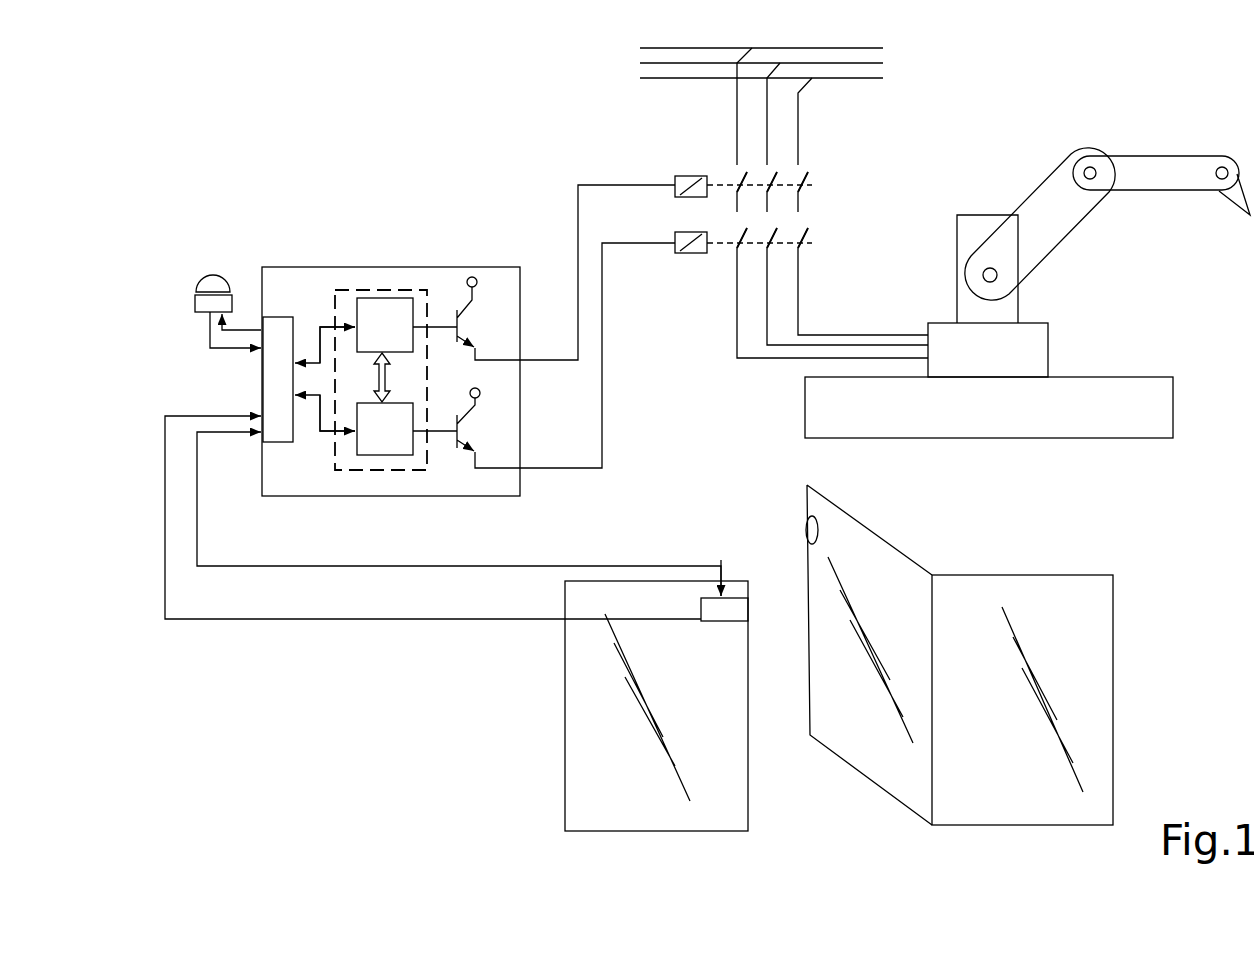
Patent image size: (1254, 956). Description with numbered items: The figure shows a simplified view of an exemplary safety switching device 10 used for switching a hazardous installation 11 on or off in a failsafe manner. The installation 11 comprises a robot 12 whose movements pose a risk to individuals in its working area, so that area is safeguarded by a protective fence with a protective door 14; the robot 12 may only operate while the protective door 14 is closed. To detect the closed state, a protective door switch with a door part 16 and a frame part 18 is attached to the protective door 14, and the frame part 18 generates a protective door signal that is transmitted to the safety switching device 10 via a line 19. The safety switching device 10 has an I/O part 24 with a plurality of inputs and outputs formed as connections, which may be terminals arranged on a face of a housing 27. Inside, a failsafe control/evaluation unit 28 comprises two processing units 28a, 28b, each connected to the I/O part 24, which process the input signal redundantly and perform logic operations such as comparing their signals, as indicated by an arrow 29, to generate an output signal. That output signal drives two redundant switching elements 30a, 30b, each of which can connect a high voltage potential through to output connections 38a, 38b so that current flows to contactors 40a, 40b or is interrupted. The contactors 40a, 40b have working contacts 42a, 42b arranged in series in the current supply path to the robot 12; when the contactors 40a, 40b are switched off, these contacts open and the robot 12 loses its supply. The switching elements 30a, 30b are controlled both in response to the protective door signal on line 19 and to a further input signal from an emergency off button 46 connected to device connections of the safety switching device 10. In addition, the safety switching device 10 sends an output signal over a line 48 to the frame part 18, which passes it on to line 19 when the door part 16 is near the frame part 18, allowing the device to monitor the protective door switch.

The safety switching device 10 is at (337, 222).
The hazardous installation 11 is at (1027, 157).
The robot 12 is at (1052, 227).
The protective door 14 is at (866, 529).
The door part 16 is at (805, 527).
The frame part 18 is at (733, 610).
The line 19 is at (372, 620).
The I/O part 24 is at (282, 315).
The housing 27 is at (280, 500).
The failsafe control/evaluation unit 28 is at (378, 290).
The processing unit 28a is at (400, 303).
The processing unit 28b is at (352, 456).
The arrow 29 is at (392, 378).
The switching element 30a is at (467, 311).
The switching element 30b is at (475, 418).
The output connection 38a is at (519, 359).
The output connection 38b is at (519, 469).
The contactor 40a is at (675, 180).
The contactor 40b is at (685, 254).
The working contacts 42a is at (812, 186).
The working contacts 42b is at (812, 244).
The emergency off button 46 is at (213, 276).
The line 48 is at (409, 566).